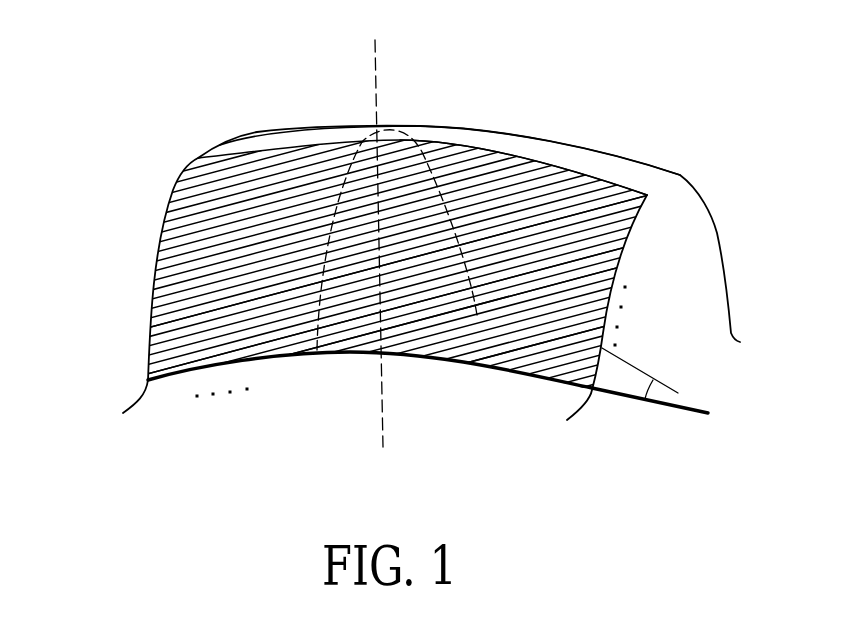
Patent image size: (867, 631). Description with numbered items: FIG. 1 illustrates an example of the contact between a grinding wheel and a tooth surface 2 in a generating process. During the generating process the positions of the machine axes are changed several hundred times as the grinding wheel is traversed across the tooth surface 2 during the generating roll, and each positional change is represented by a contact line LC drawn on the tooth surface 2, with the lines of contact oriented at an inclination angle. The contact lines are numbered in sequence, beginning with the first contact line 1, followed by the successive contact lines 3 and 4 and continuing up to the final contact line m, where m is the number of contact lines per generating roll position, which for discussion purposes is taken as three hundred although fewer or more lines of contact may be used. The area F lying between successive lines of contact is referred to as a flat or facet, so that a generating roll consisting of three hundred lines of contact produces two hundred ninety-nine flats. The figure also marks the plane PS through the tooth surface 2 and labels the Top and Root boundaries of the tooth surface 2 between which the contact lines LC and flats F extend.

The tooth surface 2 is at (153, 288).
The first flank line 1 is at (430, 253).
The third flank line 3 is at (430, 299).
The fourth flank line 4 is at (430, 317).
The number of contact lines m is at (430, 372).
The flat F is at (543, 167).
The contact line LC is at (313, 430).
The plane of symmetry PS is at (373, 68).
The tooth top Top is at (275, 140).
The tooth root Root is at (428, 384).